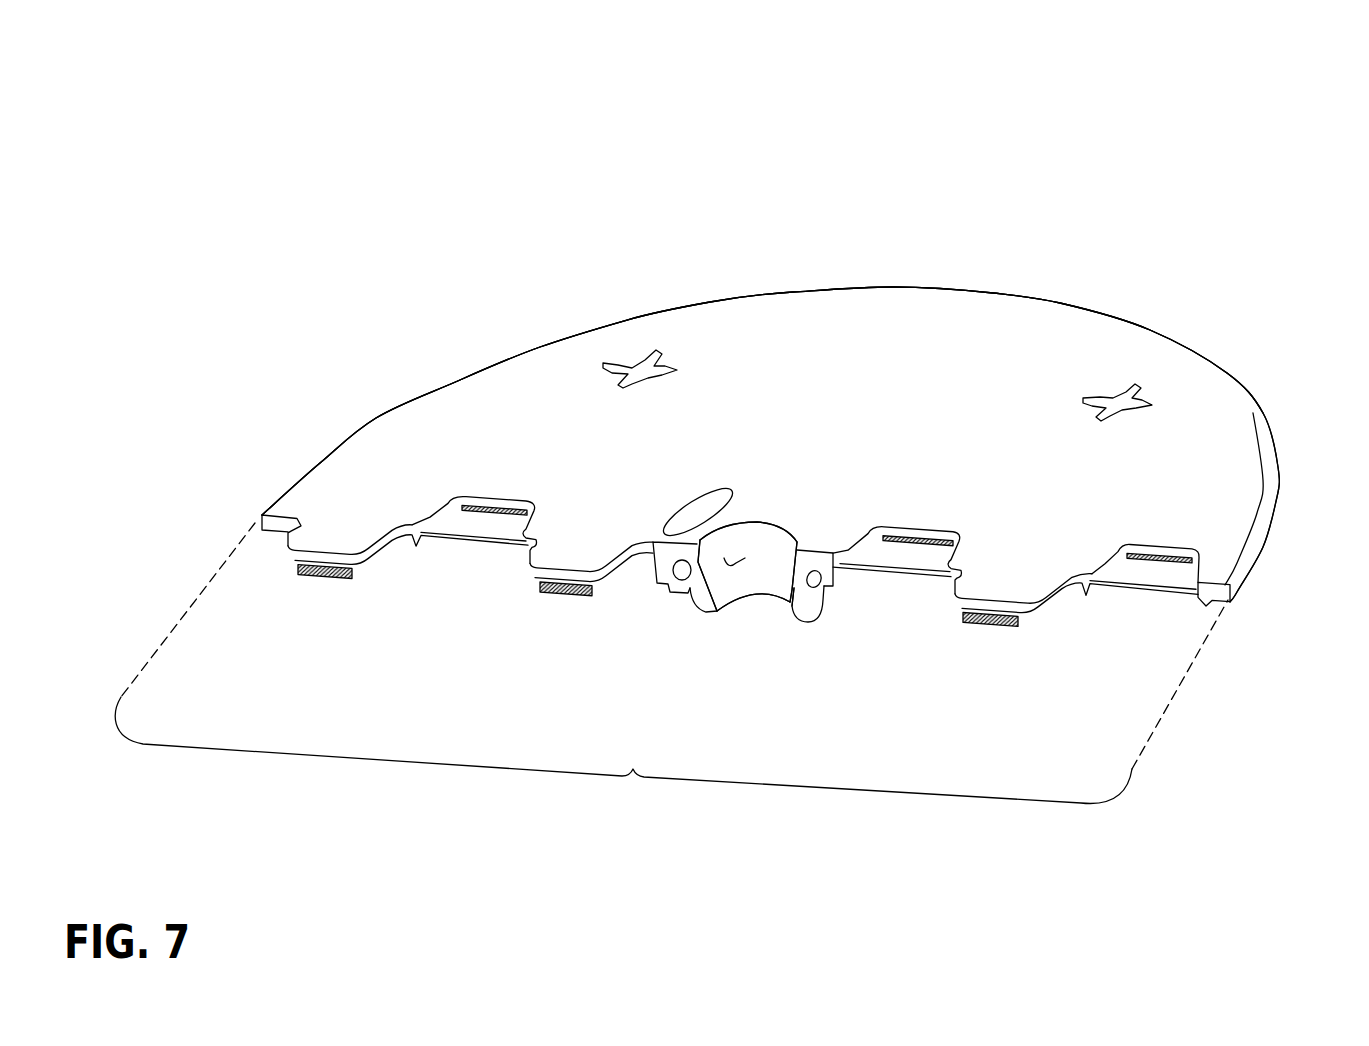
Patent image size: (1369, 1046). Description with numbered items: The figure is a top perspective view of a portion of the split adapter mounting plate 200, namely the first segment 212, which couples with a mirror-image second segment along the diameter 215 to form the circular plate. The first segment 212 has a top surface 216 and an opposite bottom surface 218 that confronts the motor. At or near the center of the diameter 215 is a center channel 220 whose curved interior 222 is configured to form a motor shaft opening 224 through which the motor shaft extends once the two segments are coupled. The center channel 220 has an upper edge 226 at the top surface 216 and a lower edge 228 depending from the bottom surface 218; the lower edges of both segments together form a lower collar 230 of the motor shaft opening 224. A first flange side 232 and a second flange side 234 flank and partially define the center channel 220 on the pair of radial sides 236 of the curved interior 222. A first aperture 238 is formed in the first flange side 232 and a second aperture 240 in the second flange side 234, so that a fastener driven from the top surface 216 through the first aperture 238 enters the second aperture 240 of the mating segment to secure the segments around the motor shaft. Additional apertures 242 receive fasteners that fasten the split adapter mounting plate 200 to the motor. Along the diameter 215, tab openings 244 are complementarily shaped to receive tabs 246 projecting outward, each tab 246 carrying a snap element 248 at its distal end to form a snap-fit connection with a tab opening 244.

The split adapter mounting plate 200 is at (527, 69).
The first segment 212 is at (381, 408).
The diameter 215 is at (671, 669).
The top surface 216 is at (540, 373).
The bottom surface 218 is at (1157, 603).
The center channel 220 is at (737, 560).
The curved interior 222 is at (773, 577).
The motor shaft opening 224 is at (762, 550).
The upper edge 226 is at (787, 532).
The lower edge 228 is at (750, 602).
The lower collar 230 is at (822, 615).
The first flange side 232 is at (663, 573).
The second flange side 234 is at (833, 583).
The radial sides 236 is at (693, 603).
The first aperture 238 is at (676, 580).
The second aperture 240 is at (820, 583).
The additional apertures 242 is at (640, 353).
The tab openings 244 is at (490, 504).
The tabs 246 is at (357, 539).
The snap element 248 is at (326, 580).